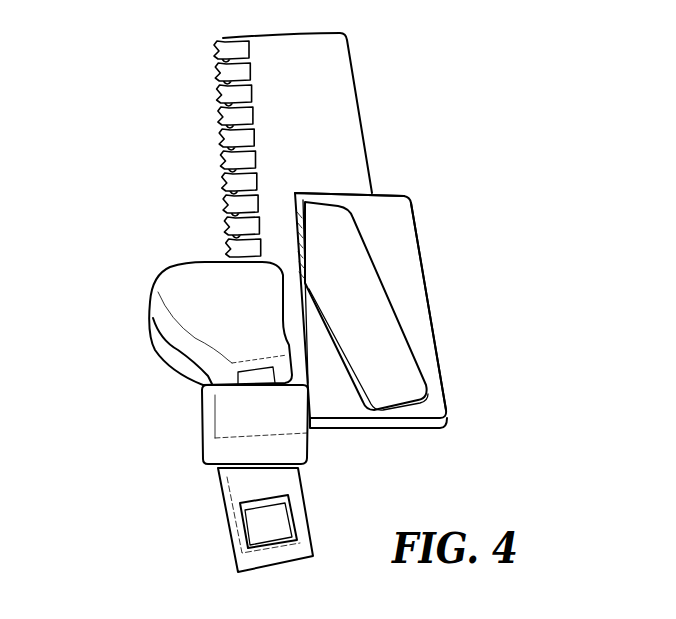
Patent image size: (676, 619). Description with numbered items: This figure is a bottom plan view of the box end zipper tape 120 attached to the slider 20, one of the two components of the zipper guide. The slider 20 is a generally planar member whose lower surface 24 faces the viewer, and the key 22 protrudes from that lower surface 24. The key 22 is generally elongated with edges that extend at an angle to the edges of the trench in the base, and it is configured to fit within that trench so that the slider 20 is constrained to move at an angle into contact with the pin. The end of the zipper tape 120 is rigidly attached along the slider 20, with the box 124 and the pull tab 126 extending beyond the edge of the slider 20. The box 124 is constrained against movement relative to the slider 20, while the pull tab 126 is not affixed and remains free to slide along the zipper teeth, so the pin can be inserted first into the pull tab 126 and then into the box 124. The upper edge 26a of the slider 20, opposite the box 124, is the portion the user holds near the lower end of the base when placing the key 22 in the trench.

The zipper tape 120 is at (303, 80).
The pull tab 126 is at (190, 280).
The box 124 is at (230, 420).
The slider 20 is at (407, 297).
The key 22 is at (412, 354).
The lower surface 24 is at (395, 230).
The upper edge 26a is at (387, 192).